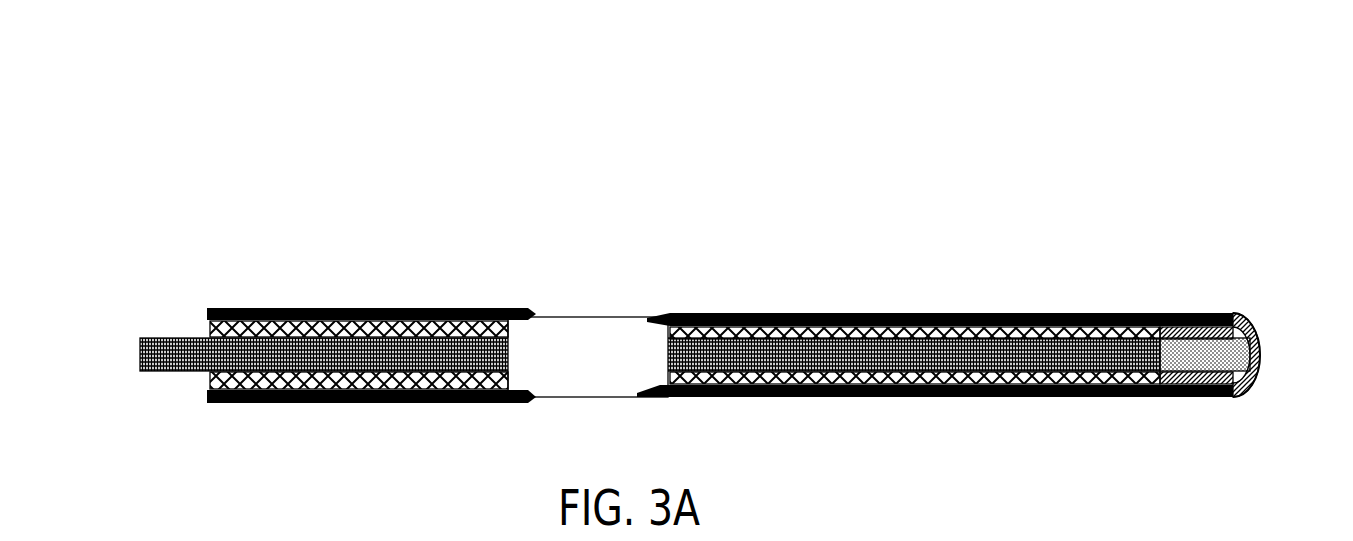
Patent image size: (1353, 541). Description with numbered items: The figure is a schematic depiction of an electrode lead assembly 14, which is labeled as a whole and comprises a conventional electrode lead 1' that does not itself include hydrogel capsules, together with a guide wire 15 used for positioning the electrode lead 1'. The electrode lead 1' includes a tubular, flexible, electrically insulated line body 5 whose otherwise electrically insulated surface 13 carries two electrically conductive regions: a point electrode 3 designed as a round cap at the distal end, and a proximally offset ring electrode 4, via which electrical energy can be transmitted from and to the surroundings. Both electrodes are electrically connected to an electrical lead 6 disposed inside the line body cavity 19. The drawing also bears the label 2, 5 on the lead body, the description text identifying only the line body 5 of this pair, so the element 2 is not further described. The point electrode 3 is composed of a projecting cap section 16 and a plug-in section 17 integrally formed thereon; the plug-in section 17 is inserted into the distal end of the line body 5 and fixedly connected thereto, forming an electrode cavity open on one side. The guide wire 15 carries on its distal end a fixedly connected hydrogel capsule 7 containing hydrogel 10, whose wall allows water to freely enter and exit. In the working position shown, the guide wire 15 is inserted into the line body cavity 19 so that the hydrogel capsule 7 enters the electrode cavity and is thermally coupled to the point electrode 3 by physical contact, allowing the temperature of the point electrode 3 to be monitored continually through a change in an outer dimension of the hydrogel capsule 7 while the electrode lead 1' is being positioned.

The electrode lead assembly 14 is at (298, 158).
The electrically insulated surface 13 is at (436, 306).
The ring electrode 4 is at (589, 316).
The outer conductor 2 is at (772, 313).
The line body 5 is at (772, 313).
The electrode lead 1' is at (951, 301).
The hydrogel capsule 7 is at (1189, 353).
The hydrogel 10 is at (1189, 353).
The point electrode 3 is at (1254, 326).
The projecting cap section 16 is at (1254, 326).
The electrical lead 6 is at (352, 403).
The line body cavity 19 is at (440, 404).
The guide wire 15 is at (877, 398).
The plug-in section 17 is at (1207, 397).